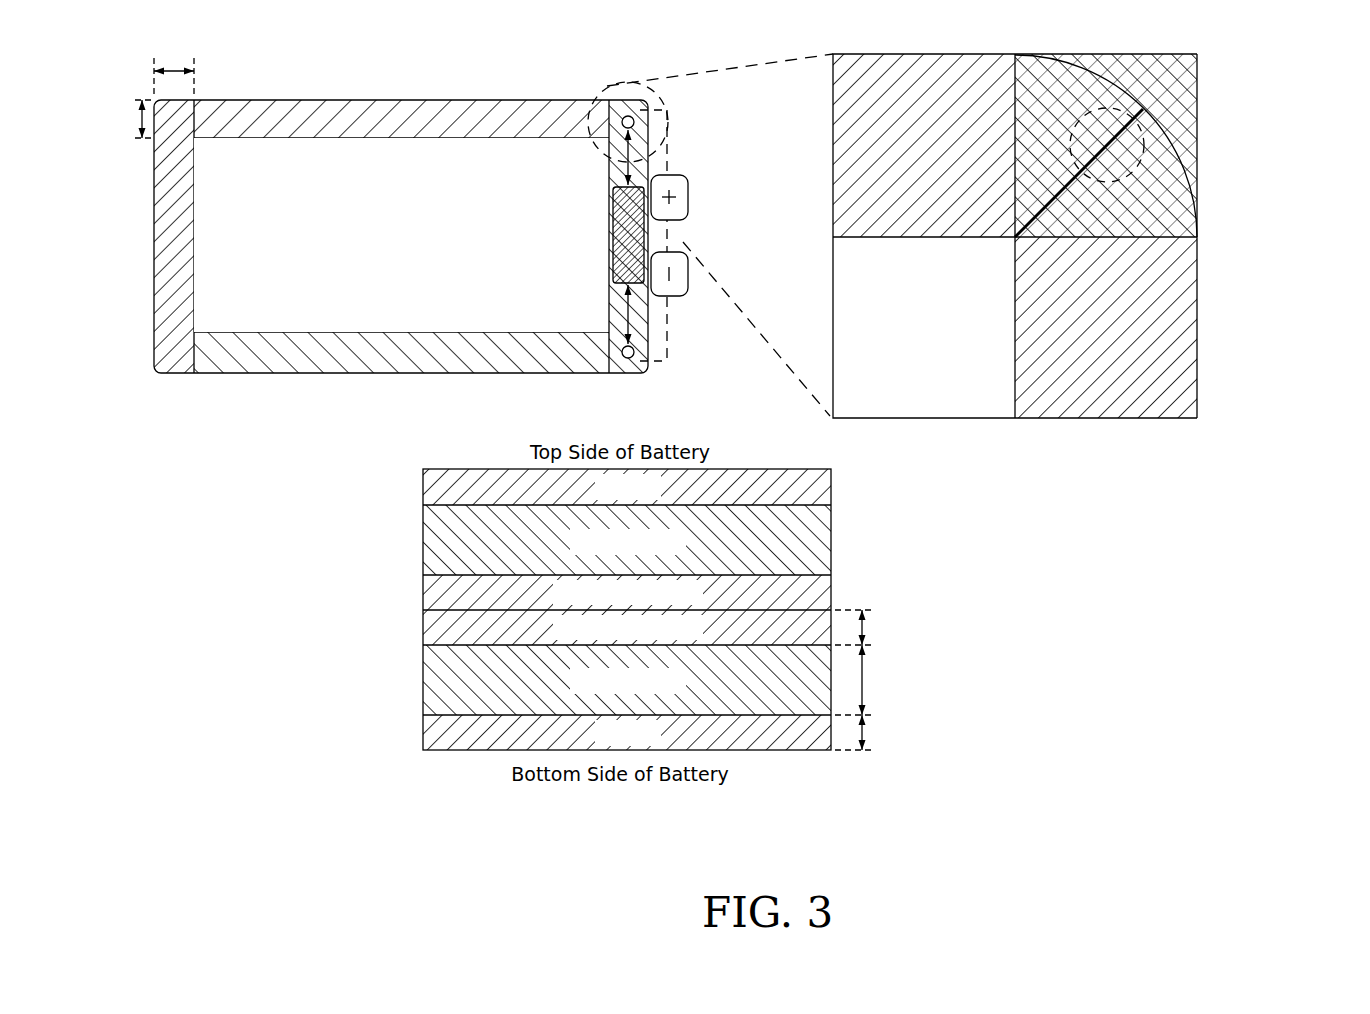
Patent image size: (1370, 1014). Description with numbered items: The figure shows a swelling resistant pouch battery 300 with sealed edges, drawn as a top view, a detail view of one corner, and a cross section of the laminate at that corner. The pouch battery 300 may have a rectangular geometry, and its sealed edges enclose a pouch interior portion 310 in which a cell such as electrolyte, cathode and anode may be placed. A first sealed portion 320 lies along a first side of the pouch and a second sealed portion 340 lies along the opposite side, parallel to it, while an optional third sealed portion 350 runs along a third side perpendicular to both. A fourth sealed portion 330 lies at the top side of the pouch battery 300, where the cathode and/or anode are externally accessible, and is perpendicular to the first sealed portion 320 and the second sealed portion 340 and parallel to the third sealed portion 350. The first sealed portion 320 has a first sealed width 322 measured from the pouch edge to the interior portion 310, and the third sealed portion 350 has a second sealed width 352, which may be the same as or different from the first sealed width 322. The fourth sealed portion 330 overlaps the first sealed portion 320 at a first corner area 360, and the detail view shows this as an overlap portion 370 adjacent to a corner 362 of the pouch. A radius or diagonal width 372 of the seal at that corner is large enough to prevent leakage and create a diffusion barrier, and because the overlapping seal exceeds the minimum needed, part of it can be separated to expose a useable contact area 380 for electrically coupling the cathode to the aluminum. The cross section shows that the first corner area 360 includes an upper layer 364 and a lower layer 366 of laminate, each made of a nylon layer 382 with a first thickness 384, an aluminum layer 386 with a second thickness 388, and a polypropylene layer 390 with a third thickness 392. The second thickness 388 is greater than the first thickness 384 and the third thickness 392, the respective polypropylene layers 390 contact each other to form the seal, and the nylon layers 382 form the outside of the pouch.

The pouch battery 300 is at (313, 89).
The pouch interior portion 310 is at (382, 248).
The first sealed portion 320 is at (511, 100).
The first sealed width 322 is at (137, 118).
The fourth sealed portion 330 is at (666, 242).
The second sealed portion 340 is at (352, 373).
The third sealed portion 350 is at (154, 266).
The second sealed width 352 is at (173, 66).
The first corner area 360 is at (890, 44).
The corner 362 is at (1198, 55).
The upper layer 364 is at (880, 531).
The lower layer 366 is at (948, 701).
The overlap portion 370 is at (1122, 213).
The diagonal width 372 is at (1099, 112).
The useable contact area 380 is at (1140, 89).
The nylon layer 382 is at (430, 493).
The first thickness 384 is at (865, 735).
The aluminum layer 386 is at (432, 541).
The second thickness 388 is at (865, 682).
The polypropylene layer 390 is at (430, 596).
The third thickness 392 is at (865, 630).